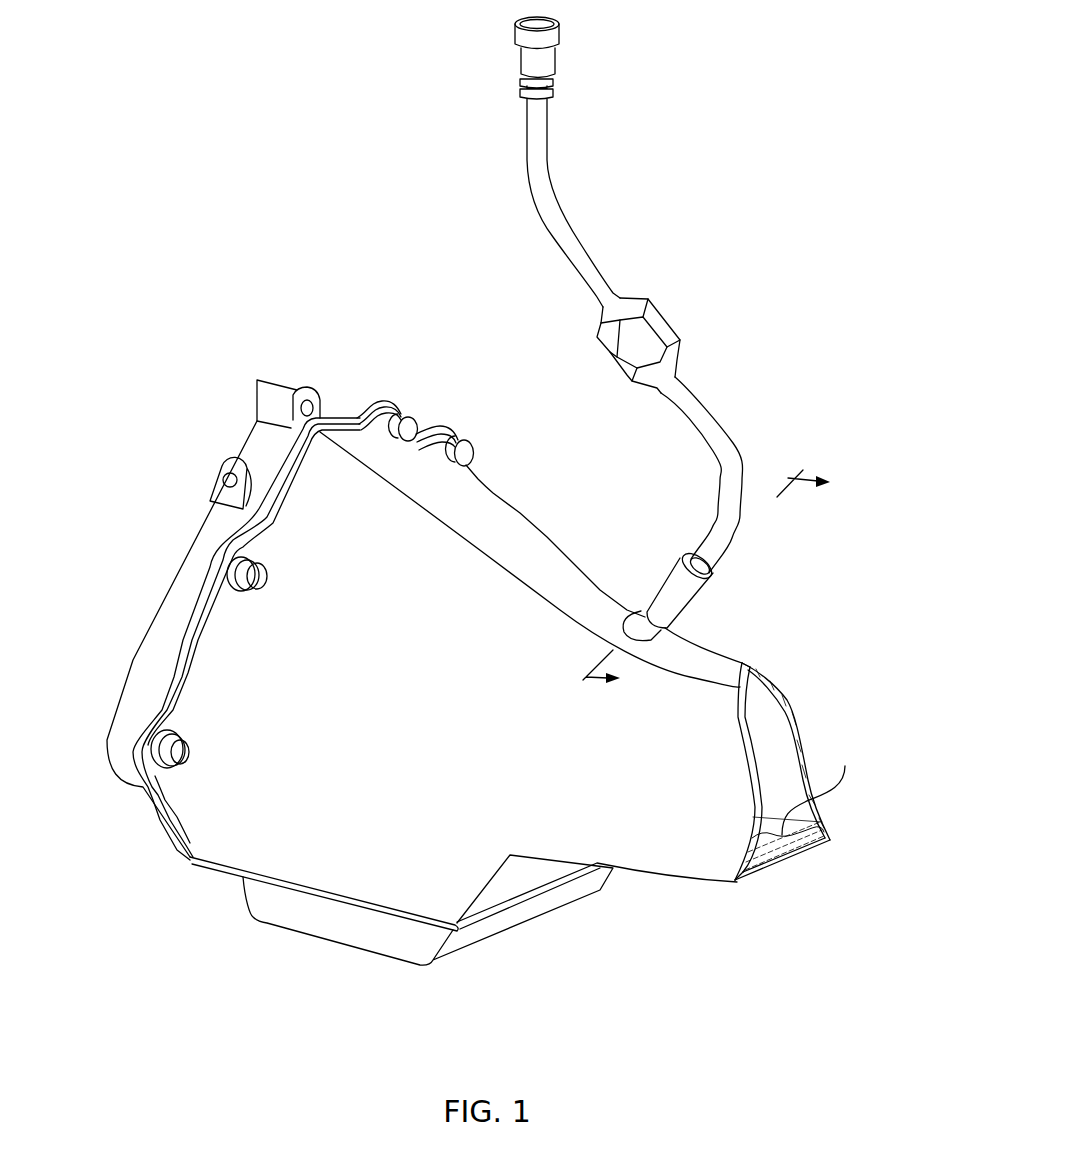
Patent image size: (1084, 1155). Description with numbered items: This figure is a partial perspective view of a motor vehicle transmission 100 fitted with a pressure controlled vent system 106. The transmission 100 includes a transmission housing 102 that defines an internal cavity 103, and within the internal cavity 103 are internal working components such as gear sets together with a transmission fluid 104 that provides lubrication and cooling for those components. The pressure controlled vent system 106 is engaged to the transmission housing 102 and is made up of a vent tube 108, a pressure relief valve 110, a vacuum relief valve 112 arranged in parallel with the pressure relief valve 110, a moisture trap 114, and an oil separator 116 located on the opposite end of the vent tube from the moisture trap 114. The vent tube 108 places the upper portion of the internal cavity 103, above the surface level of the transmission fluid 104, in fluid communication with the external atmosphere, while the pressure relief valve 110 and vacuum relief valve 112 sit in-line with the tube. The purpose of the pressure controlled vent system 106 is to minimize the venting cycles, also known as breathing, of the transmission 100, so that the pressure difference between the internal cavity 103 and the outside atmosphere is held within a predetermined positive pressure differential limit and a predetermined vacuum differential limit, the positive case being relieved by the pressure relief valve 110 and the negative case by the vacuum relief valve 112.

The transmission 100 is at (147, 450).
The transmission housing 102 is at (697, 850).
The internal cavity 103 is at (767, 730).
The transmission fluid 104 is at (770, 847).
The pressure controlled vent system 106 is at (705, 381).
The vent tube 108 is at (540, 177).
The pressure relief valve 110 is at (666, 331).
The vacuum relief valve 112 is at (618, 357).
The moisture trap 114 is at (530, 60).
The oil separator 116 is at (683, 597).